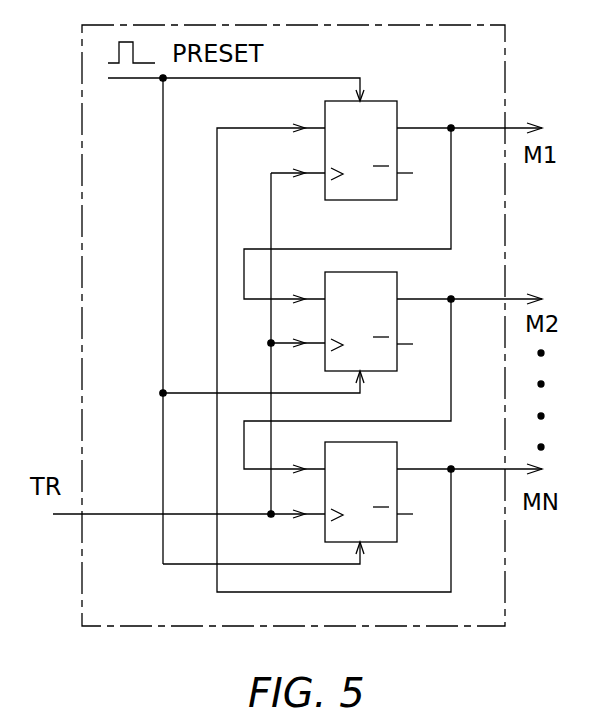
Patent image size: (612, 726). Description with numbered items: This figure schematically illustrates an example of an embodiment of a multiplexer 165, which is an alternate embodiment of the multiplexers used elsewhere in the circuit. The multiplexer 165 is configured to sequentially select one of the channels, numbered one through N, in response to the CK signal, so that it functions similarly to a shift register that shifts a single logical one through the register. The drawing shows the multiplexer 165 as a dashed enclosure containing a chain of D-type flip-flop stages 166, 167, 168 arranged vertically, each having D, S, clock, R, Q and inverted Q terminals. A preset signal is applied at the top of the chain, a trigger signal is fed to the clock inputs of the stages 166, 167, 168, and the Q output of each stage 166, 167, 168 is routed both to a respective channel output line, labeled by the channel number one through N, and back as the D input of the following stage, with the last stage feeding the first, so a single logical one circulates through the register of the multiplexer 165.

The multiplexer 165 is at (546, 680).
The first D flip-flop 166 is at (397, 113).
The second D flip-flop 167 is at (397, 284).
The Nth D flip-flop 168 is at (397, 454).